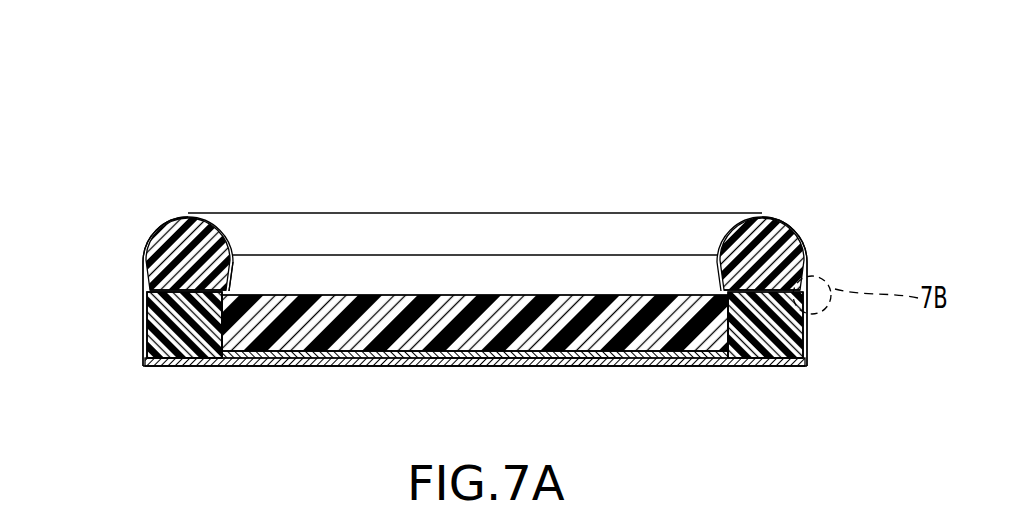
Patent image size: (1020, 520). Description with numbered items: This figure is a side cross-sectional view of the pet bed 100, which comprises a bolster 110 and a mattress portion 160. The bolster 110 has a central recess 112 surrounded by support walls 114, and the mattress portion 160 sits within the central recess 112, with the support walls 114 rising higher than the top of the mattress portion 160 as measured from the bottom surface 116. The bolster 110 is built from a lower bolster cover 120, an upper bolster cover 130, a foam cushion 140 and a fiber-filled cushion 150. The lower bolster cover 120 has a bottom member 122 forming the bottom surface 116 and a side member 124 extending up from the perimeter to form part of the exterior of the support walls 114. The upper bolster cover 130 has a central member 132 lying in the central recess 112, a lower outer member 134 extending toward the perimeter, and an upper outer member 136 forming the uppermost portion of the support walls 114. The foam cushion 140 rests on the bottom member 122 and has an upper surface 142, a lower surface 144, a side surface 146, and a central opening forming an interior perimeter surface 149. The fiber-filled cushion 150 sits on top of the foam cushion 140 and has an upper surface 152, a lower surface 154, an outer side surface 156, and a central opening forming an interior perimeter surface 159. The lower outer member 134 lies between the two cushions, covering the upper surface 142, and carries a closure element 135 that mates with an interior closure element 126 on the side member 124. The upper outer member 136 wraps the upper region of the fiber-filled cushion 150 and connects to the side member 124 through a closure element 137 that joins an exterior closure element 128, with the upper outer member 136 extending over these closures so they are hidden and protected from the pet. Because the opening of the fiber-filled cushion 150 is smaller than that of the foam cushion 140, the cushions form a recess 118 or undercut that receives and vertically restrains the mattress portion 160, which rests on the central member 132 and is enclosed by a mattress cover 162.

The pet bed 100 is at (203, 96).
The bolster 110 is at (153, 381).
The central recess 112 is at (582, 215).
The support walls 114 is at (807, 338).
The bottom surface 116 is at (437, 367).
The recess 118 is at (240, 296).
The lower bolster cover 120 is at (337, 367).
The bottom member 122 is at (518, 367).
The side member 124 is at (807, 353).
The interior closure element 126 is at (807, 274).
The exterior closure element 128 is at (807, 302).
The upper bolster cover 130 is at (688, 212).
The central member 132 is at (615, 362).
The lower outer member 134 is at (750, 346).
The closure element 135 is at (770, 342).
The upper outer member 136 is at (800, 232).
The closure element 137 is at (802, 291).
The foam cushion 140 is at (158, 335).
The upper surface 142 is at (150, 304).
The lower surface 144 is at (190, 368).
The side surface 146 is at (147, 318).
The interior perimeter surface 149 is at (205, 352).
The fiber-filled cushion 150 is at (772, 214).
The upper surface 152 is at (183, 214).
The lower surface 154 is at (176, 287).
The outer side surface 156 is at (143, 234).
The interior perimeter surface 159 is at (241, 232).
The mattress portion 160 is at (398, 295).
The mattress cover 162 is at (457, 295).